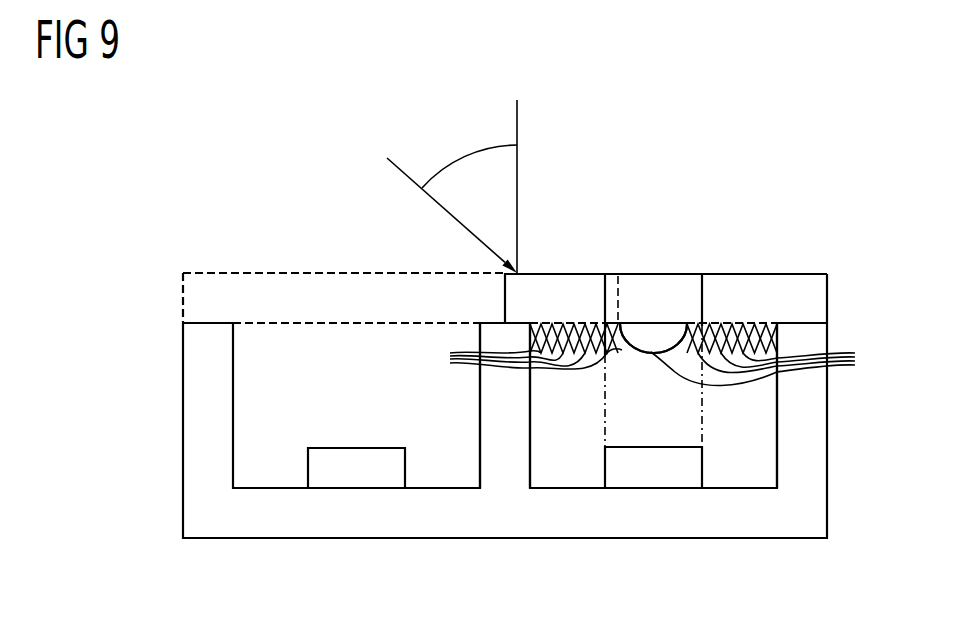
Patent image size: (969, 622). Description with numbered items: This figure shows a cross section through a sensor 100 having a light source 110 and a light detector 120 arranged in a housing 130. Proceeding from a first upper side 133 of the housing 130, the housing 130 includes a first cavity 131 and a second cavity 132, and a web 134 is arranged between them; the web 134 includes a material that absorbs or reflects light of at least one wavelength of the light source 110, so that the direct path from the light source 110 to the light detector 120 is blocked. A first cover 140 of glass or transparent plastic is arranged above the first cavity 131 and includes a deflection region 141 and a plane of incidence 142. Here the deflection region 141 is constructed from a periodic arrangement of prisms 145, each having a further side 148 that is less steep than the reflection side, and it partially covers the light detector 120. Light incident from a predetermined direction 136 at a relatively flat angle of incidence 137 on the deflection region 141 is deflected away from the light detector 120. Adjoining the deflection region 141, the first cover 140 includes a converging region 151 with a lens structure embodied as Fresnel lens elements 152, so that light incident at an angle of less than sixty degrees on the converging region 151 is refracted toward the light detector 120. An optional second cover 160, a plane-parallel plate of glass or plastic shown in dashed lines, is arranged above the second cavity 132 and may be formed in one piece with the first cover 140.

The sensor 100 is at (186, 192).
The light source 110 is at (357, 472).
The light detector 120 is at (653, 472).
The housing 130 is at (813, 517).
The first cavity 131 is at (738, 472).
The second cavity 132 is at (268, 472).
The first upper side 133 is at (762, 488).
The web 134 is at (507, 472).
The predetermined direction 136 is at (402, 173).
The angle of incidence 137 is at (507, 205).
The first cover 140 is at (813, 300).
The deflection region 141 is at (553, 290).
The plane of incidence 142 is at (637, 273).
The prisms 145 is at (514, 350).
The further side 148 is at (667, 287).
The converging region 151 is at (653, 338).
The Fresnel lens elements 152 is at (774, 355).
The second cover 160 is at (195, 298).